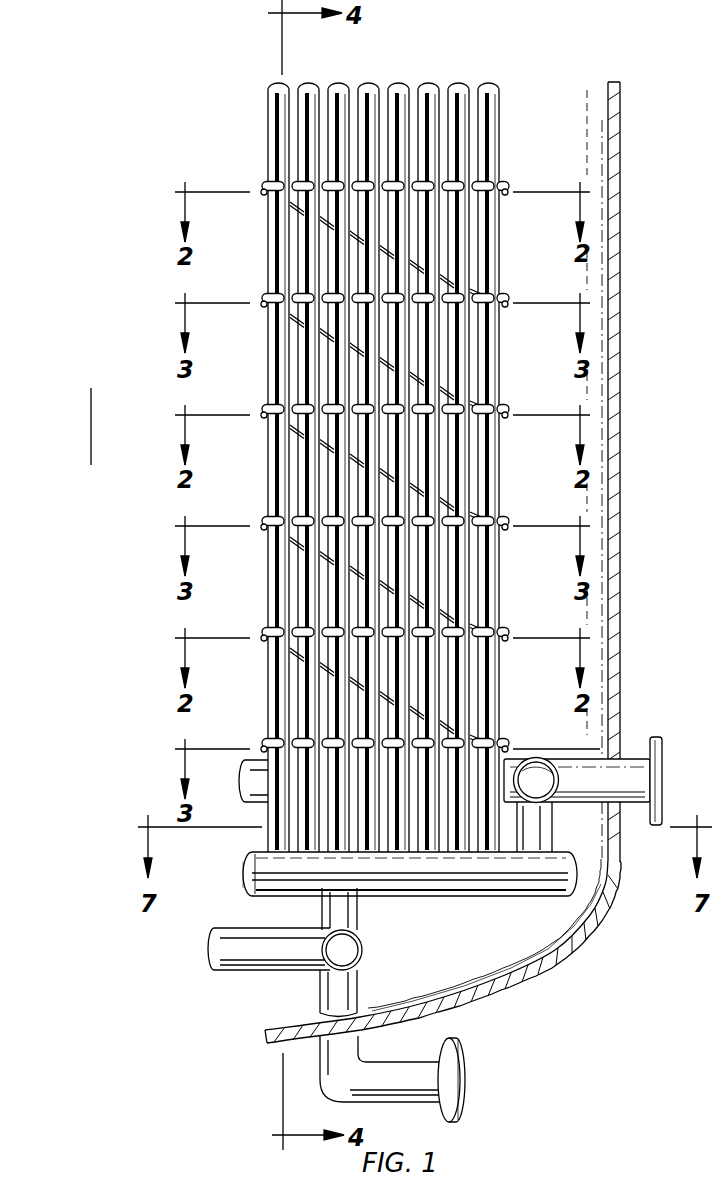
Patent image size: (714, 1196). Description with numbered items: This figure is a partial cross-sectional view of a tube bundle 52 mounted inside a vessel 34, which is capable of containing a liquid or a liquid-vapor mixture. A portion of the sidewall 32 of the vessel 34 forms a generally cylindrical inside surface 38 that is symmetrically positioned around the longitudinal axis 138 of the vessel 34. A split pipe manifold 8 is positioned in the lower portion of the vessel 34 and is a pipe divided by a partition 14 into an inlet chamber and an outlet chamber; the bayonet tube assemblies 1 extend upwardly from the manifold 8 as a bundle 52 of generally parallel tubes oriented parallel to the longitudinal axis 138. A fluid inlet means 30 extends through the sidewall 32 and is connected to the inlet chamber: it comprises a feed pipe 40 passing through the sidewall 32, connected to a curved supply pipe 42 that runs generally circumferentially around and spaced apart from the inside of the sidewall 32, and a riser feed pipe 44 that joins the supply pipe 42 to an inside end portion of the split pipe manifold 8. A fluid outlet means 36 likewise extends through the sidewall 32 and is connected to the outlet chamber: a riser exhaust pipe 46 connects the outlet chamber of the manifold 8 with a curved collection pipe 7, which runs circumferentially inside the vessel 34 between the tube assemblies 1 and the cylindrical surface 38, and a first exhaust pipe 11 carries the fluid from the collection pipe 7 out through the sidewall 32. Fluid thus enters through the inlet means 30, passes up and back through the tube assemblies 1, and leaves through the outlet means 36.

The bayonet tube assembly 1 is at (445, 282).
The curved collection pipe 7 is at (533, 759).
The split pipe manifold 8 is at (243, 863).
The first exhaust pipe 11 is at (633, 760).
The partition 14 is at (531, 890).
The fluid inlet means 30 is at (302, 984).
The sidewall 32 is at (600, 945).
The vessel 34 is at (630, 450).
The fluid outlet means 36 is at (549, 752).
The generally cylindrical inside surface 38 is at (604, 628).
The feed pipe 40 is at (446, 1040).
The curved supply pipe 42 is at (215, 930).
The riser feed pipe 44 is at (360, 918).
The riser exhaust pipe 46 is at (551, 846).
The tube bundle 52 is at (420, 72).
The longitudinal axis 138 is at (91, 412).